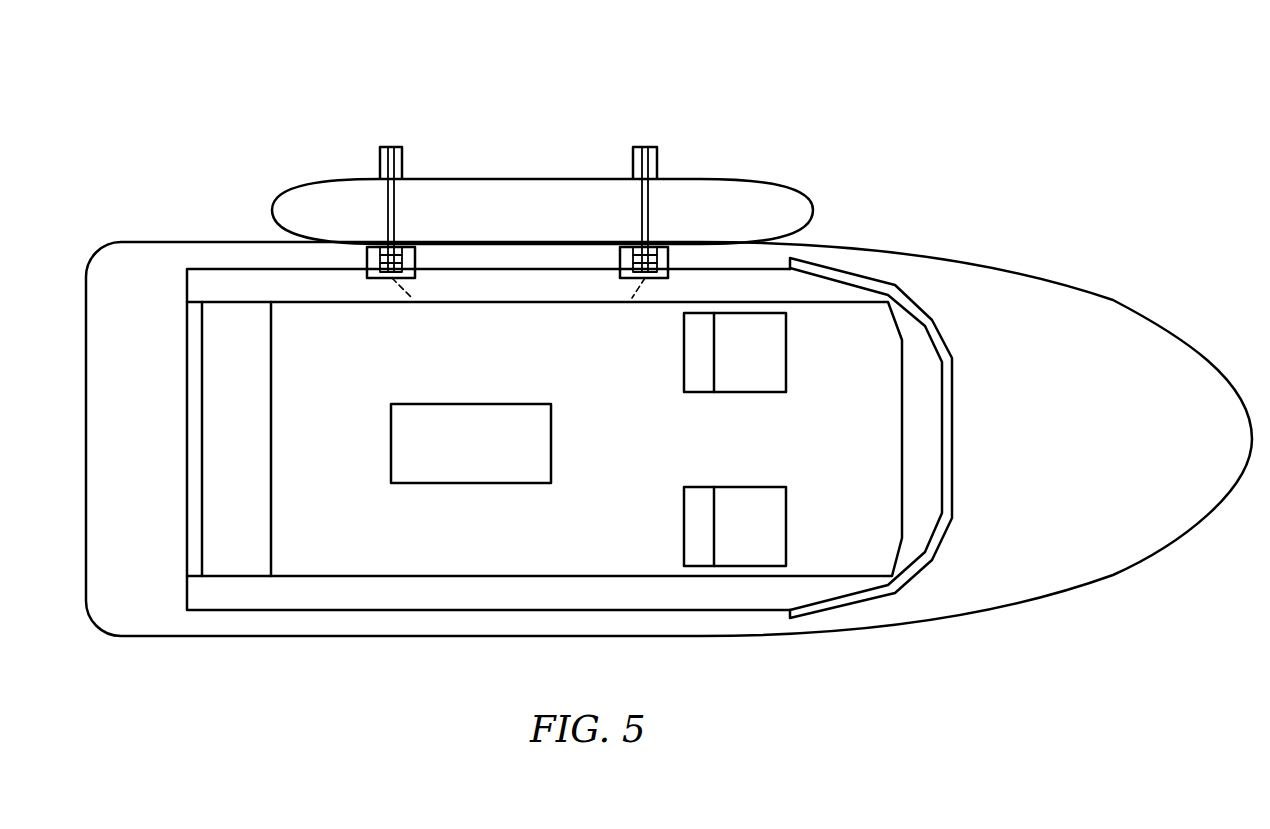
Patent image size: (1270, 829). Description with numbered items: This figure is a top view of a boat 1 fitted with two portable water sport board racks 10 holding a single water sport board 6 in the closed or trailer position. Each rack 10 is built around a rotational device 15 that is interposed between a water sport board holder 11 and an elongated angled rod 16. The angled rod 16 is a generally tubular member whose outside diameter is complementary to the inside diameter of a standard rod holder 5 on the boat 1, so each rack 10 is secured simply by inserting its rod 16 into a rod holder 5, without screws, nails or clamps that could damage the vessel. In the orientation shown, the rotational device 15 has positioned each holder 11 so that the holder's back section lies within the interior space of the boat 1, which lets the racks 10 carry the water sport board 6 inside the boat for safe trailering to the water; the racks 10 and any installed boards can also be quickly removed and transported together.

The boat 1 is at (1073, 464).
The rod holder 5 is at (405, 278).
The water sport board 6 is at (543, 227).
The portable water sport board rack 10 is at (326, 99).
The water sport board holder 11 is at (372, 162).
The rotational device 15 is at (346, 288).
The elongated angled rod 16 is at (412, 300).